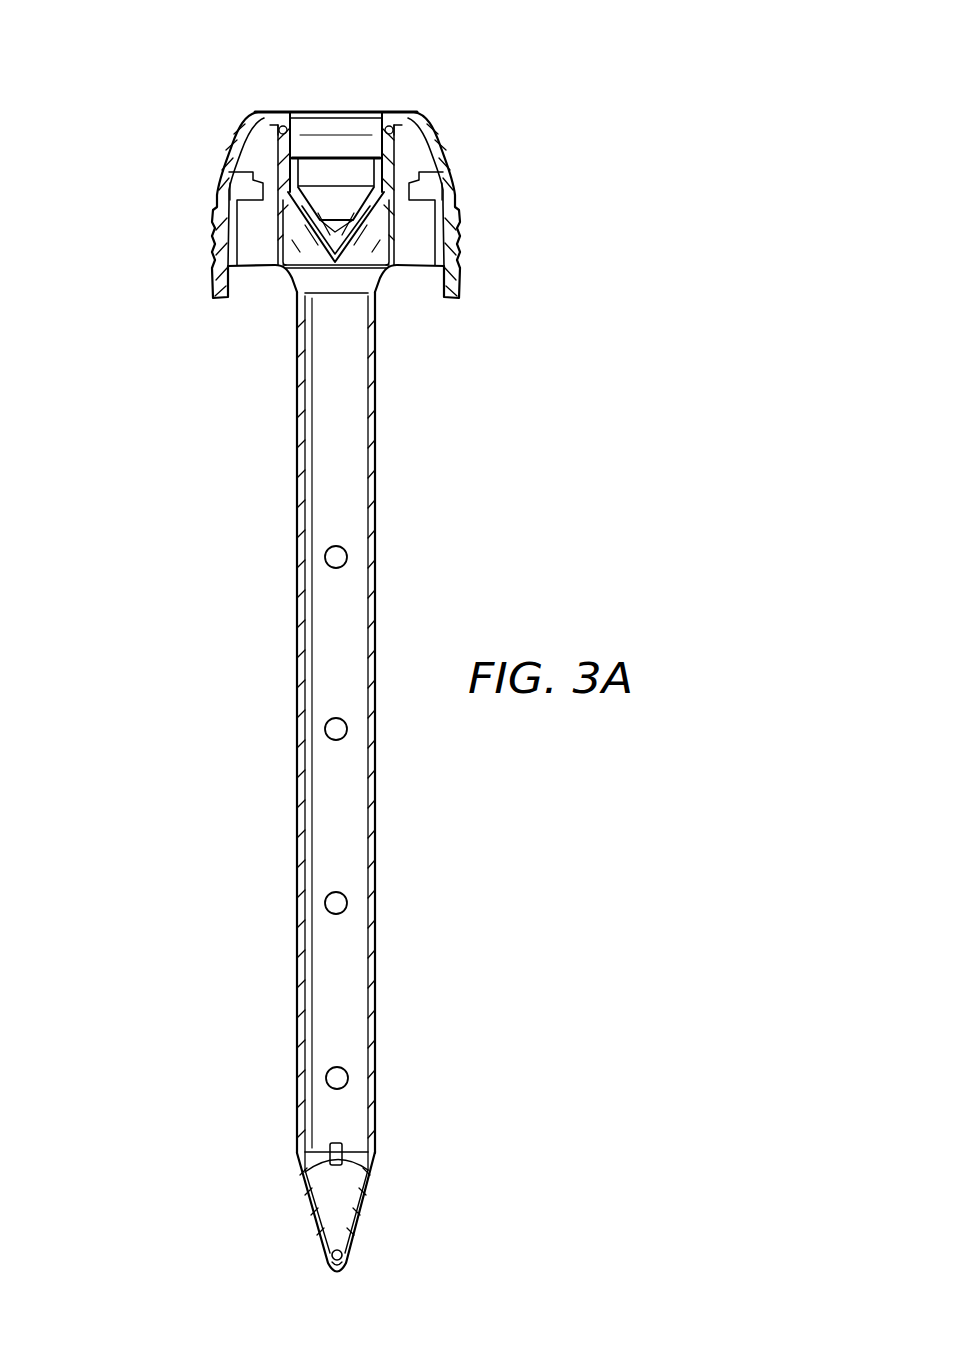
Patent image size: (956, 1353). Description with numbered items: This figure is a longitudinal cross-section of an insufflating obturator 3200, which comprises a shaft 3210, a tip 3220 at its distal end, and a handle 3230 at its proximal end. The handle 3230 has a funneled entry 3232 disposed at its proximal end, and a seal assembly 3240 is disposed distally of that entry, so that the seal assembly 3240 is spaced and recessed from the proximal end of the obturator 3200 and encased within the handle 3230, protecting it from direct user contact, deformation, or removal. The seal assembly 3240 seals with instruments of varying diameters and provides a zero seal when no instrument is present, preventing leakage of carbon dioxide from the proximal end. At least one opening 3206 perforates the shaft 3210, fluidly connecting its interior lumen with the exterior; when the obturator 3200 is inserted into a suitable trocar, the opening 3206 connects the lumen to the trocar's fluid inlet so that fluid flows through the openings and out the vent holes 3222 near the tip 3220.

The insufflating obturator 3200 is at (184, 136).
The funneled entry 3232 is at (347, 116).
The handle 3230 is at (450, 176).
The seal assembly 3240 is at (308, 210).
The shaft 3210 is at (376, 563).
The opening 3206 is at (326, 559).
The tip 3220 is at (368, 1185).
The vent holes 3222 is at (331, 1253).